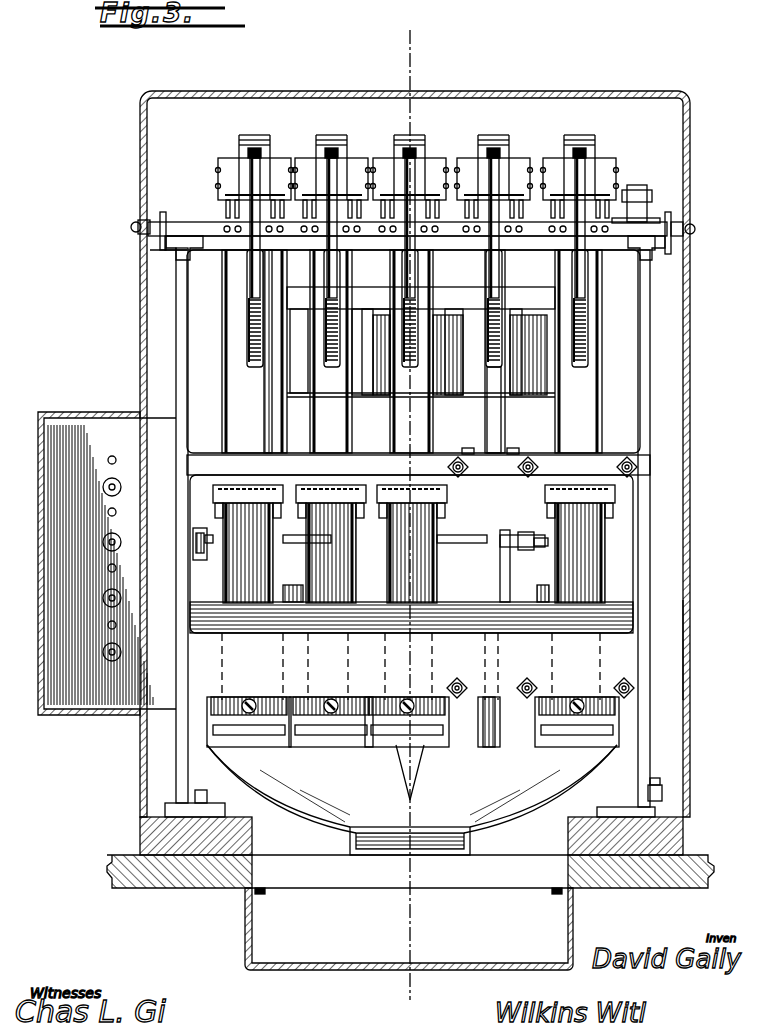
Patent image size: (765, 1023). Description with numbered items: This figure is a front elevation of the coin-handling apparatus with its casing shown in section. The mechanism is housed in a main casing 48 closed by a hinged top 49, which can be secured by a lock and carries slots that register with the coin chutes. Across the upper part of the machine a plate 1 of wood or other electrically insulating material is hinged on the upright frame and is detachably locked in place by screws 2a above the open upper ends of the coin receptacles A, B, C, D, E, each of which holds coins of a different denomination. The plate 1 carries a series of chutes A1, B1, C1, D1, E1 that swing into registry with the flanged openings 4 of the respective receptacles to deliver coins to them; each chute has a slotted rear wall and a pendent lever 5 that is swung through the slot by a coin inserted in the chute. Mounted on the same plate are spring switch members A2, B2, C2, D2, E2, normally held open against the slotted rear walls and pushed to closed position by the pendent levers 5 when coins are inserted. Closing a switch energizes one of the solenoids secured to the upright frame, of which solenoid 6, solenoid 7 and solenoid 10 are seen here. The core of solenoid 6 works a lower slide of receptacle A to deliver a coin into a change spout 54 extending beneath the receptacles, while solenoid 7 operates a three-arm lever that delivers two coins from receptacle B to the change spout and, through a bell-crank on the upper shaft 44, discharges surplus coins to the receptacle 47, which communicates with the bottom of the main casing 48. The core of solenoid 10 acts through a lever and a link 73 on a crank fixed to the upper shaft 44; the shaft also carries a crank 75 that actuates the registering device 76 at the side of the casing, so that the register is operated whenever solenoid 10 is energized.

The plate 1 is at (176, 222).
The screws 2a is at (714, 210).
The flanged openings 4 is at (407, 512).
The pendent levers 5 is at (645, 400).
The solenoid 6 is at (446, 396).
The solenoid 7 is at (368, 390).
The solenoid 10 is at (520, 396).
The upper shaft 44 is at (542, 548).
The receptacle 47 is at (245, 933).
The main casing 48 is at (690, 670).
The hinged top 49 is at (690, 160).
The funnel 54 is at (392, 856).
The link 73 is at (504, 532).
The crank 75 is at (190, 583).
The registering device 76 is at (98, 428).
The coin receptacle A is at (390, 446).
The coin receptacle B is at (316, 446).
The coin receptacle C is at (558, 424).
The coin receptacle D is at (222, 438).
The coin receptacle E is at (488, 410).
The chute A1 is at (416, 286).
The chute B1 is at (334, 290).
The chute C1 is at (584, 292).
The chute D1 is at (247, 284).
The chute E1 is at (498, 290).
The spring switch member A2 is at (422, 142).
The spring switch member B2 is at (345, 142).
The spring switch member C2 is at (594, 142).
The spring switch member D2 is at (268, 142).
The spring switch member E2 is at (503, 142).